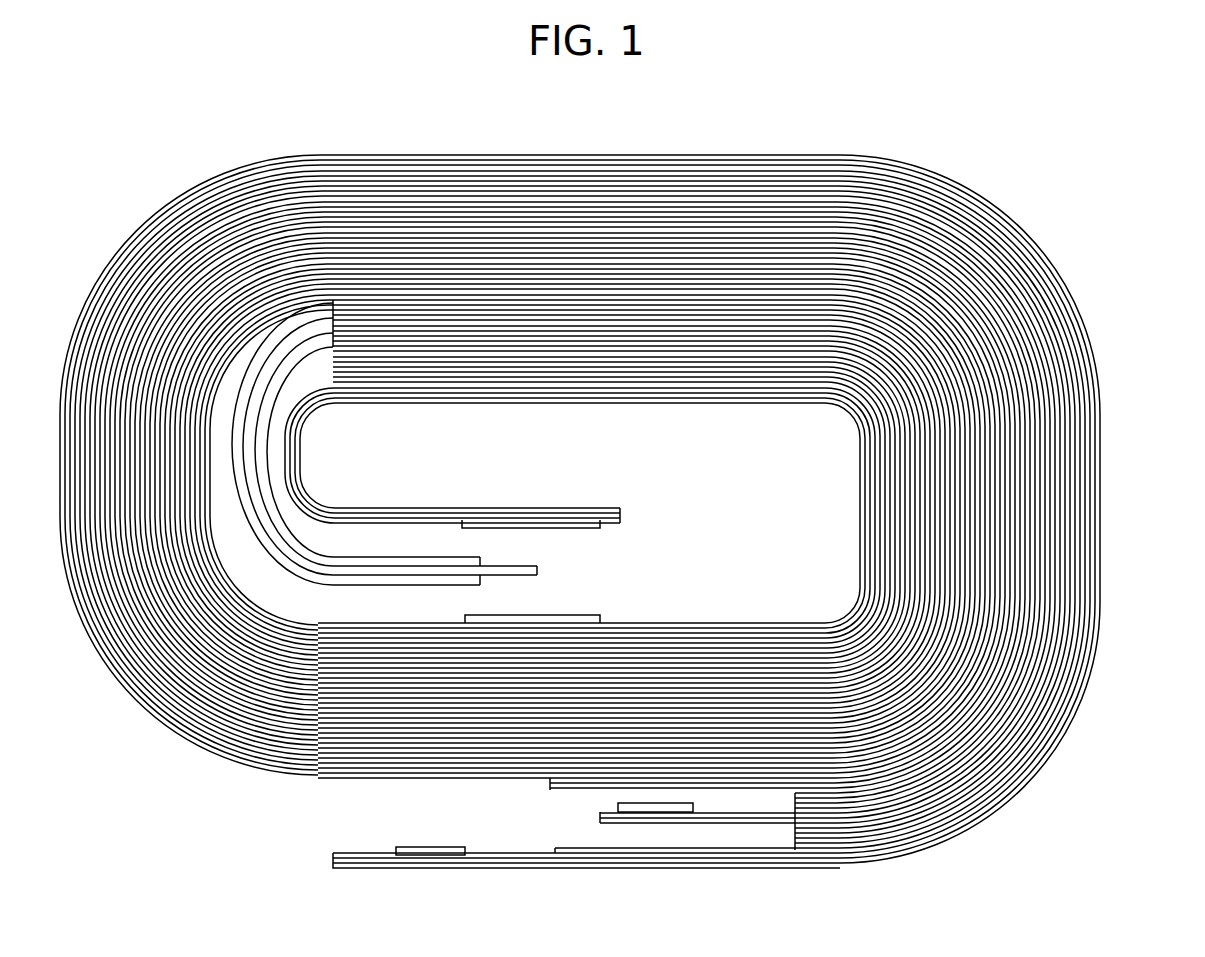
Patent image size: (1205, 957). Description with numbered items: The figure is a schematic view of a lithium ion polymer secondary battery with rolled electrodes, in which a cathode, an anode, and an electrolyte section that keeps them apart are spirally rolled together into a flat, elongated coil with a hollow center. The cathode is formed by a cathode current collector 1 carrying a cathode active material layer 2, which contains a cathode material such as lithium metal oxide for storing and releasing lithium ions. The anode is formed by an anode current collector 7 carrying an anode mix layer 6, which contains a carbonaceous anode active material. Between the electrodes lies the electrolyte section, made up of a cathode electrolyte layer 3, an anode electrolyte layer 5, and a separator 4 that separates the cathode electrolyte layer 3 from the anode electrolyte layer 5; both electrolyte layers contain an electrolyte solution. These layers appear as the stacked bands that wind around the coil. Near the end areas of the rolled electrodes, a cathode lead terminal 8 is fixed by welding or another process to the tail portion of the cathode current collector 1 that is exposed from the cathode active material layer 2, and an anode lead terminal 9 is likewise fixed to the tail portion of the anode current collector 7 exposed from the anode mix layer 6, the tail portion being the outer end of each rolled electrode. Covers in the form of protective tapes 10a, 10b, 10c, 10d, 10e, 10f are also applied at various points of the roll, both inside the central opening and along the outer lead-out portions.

The cathode current collector 1 is at (1100, 400).
The cathode active material layer 2 is at (1088, 380).
The cathode electrolyte layer 3 is at (1080, 357).
The separator 4 is at (1072, 336).
The anode electrolyte layer 5 is at (1062, 312).
The anode mix layer 6 is at (1045, 290).
The anode current collector 7 is at (1020, 274).
The cathode lead terminal 8 is at (436, 857).
The anode lead terminal 9 is at (665, 813).
The cover 10a is at (318, 553).
The cover 10b is at (318, 590).
The cover 10c is at (576, 531).
The cover 10d is at (578, 615).
The cover 10e is at (555, 783).
The cover 10f is at (555, 843).